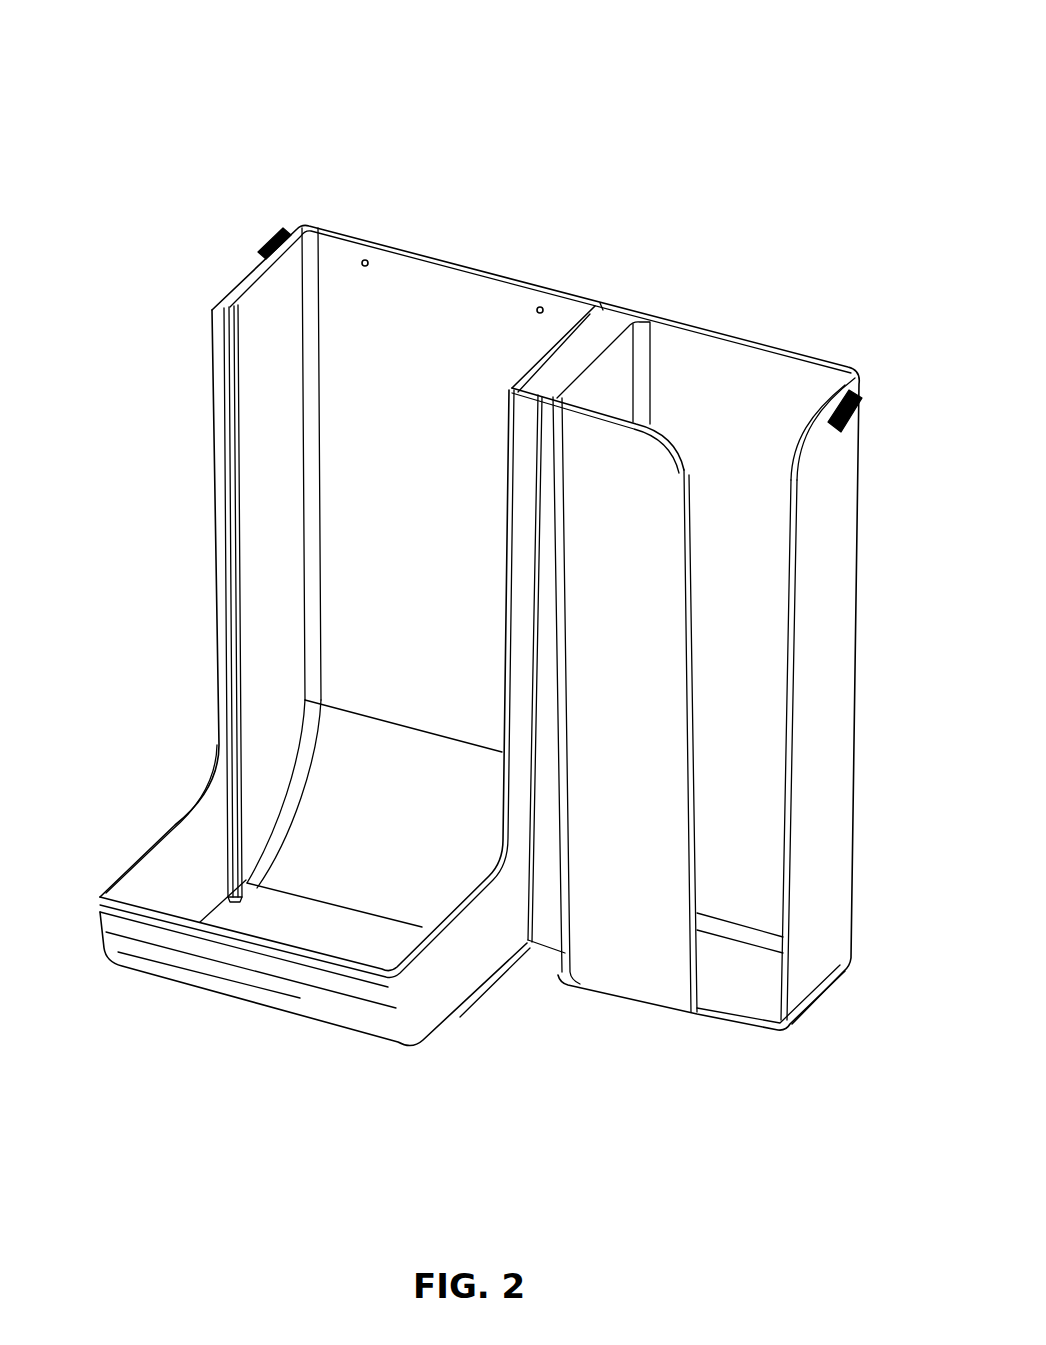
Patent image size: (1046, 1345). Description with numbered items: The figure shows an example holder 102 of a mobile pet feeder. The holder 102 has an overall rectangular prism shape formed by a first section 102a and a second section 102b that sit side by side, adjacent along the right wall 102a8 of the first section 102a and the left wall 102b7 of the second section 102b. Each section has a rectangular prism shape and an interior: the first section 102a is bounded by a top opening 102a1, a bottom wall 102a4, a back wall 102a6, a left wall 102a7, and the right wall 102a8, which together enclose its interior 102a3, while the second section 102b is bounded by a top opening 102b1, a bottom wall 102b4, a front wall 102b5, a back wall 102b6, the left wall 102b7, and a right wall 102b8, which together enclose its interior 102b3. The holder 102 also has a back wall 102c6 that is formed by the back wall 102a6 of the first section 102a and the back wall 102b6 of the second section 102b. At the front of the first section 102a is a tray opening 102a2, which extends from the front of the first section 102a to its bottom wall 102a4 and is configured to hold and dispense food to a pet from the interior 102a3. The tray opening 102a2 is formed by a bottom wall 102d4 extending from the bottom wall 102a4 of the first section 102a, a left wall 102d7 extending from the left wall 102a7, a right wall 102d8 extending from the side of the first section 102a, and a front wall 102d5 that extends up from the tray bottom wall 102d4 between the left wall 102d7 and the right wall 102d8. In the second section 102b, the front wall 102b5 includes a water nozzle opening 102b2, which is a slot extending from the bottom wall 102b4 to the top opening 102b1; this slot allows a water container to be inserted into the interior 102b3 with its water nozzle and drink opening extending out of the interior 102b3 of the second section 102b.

The holder 102 is at (672, 67).
The first section 102a is at (432, 153).
The top opening 102a1 is at (325, 217).
The tray opening 102a2 is at (152, 788).
The interior 102a3 is at (443, 298).
The bottom wall 102a4 is at (403, 865).
The back wall 102a6 is at (438, 548).
The left wall 102a7 is at (268, 524).
The right wall 102a8 is at (484, 477).
The second section 102b is at (820, 200).
The top opening 102b1 is at (851, 358).
The water nozzle opening 102b2 is at (750, 1035).
The interior 102b3 is at (737, 368).
The bottom wall 102b4 is at (623, 1018).
The front wall 102b5 is at (653, 702).
The back wall 102b6 is at (765, 492).
The left wall 102b7 is at (610, 392).
The right wall 102b8 is at (828, 632).
The back wall 102c6 is at (603, 244).
The bottom wall 102d4 is at (346, 937).
The front wall 102d5 is at (273, 985).
The left wall 102d7 is at (210, 889).
The right wall 102d8 is at (489, 970).